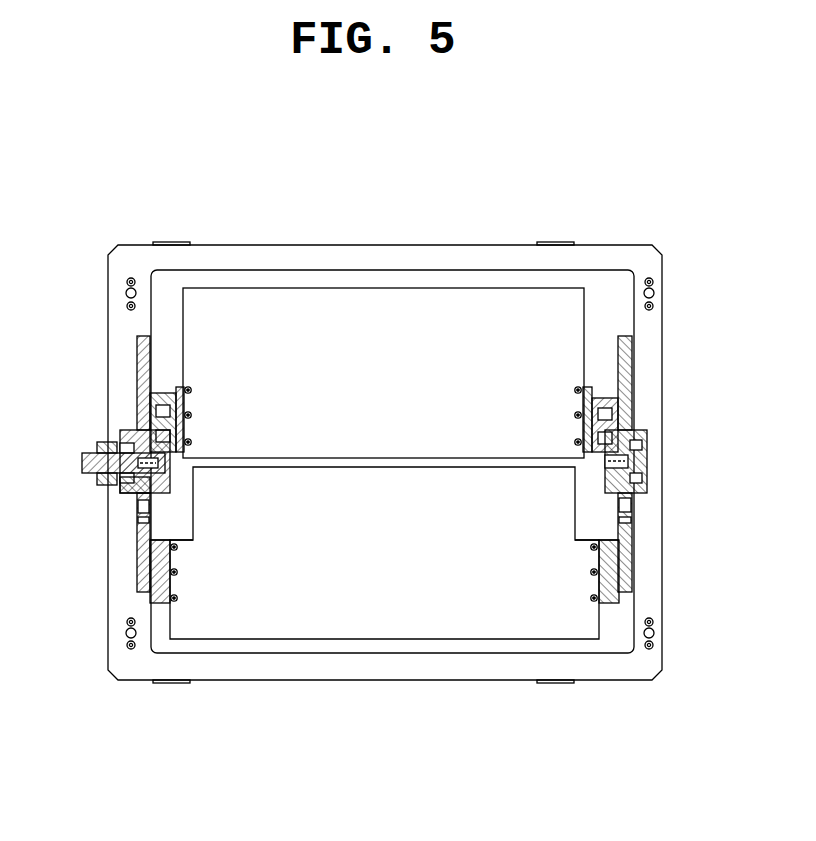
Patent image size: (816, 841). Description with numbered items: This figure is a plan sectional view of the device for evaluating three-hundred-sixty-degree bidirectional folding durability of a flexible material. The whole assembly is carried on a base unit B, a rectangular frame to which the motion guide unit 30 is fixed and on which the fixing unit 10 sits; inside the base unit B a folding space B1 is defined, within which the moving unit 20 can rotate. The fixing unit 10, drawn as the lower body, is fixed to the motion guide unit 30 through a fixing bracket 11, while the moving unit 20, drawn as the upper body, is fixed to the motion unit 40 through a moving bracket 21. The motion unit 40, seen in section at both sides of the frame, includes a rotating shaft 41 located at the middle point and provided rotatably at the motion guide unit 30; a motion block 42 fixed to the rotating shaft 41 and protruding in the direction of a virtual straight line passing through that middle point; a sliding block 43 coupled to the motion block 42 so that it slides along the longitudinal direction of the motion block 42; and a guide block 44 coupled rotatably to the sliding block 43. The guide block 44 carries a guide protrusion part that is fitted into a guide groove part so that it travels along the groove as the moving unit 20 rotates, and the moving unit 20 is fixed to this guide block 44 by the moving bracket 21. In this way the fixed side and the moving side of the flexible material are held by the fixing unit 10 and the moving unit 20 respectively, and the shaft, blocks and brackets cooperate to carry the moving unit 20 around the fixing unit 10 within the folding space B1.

The base unit B is at (613, 245).
The folding space B1 is at (608, 289).
The fixing unit 10 is at (394, 565).
The fixing bracket 11 is at (612, 604).
The moving unit 20 is at (394, 385).
The moving bracket 21 is at (591, 387).
The motion guide unit 30 is at (135, 570).
The motion unit 40 is at (605, 394).
The rotating shaft 41 is at (82, 466).
The motion block 42 is at (124, 432).
The sliding block 43 is at (118, 447).
The guide block 44 is at (135, 403).